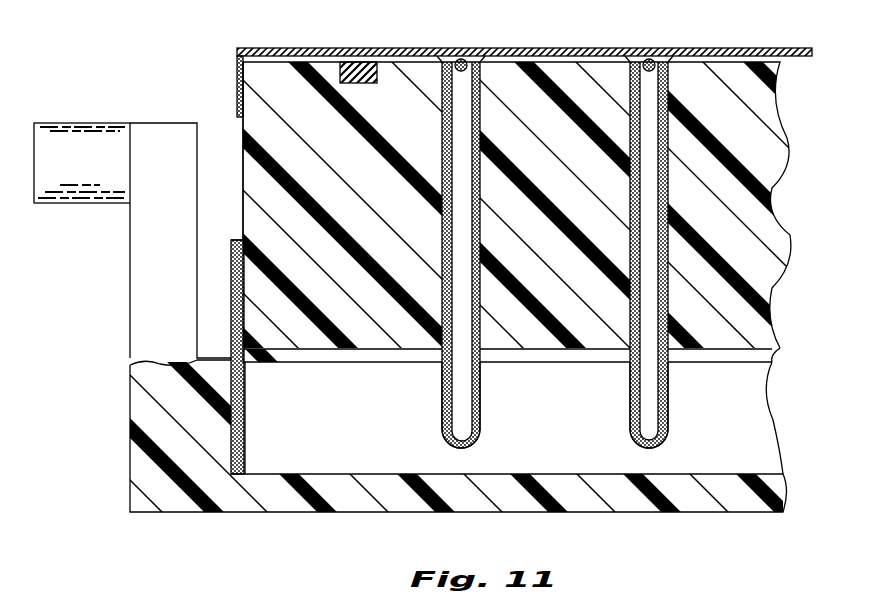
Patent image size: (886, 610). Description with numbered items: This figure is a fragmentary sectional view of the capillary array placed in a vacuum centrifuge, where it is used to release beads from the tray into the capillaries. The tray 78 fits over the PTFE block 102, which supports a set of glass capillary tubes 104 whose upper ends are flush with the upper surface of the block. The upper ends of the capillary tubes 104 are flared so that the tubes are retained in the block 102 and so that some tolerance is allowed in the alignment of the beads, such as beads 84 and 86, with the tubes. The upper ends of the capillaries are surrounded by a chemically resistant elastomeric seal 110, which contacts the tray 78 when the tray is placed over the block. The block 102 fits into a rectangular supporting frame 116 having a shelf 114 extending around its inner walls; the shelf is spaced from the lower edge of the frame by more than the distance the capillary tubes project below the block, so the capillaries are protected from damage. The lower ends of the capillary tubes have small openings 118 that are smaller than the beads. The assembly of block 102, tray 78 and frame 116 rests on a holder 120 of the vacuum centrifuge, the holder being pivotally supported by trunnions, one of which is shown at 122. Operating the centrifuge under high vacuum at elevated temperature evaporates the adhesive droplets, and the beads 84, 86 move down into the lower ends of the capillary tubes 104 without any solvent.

The tray 78 is at (563, 52).
The bead 84 is at (468, 55).
The bead 86 is at (656, 52).
The PTFE block 102 is at (415, 337).
The capillary tubes 104 is at (633, 383).
The elastomeric seal 110 is at (371, 54).
The shelf 114 is at (278, 362).
The frame 116 is at (240, 420).
The small openings 118 is at (642, 455).
The holder 120 is at (287, 500).
The trunnion 122 is at (75, 145).